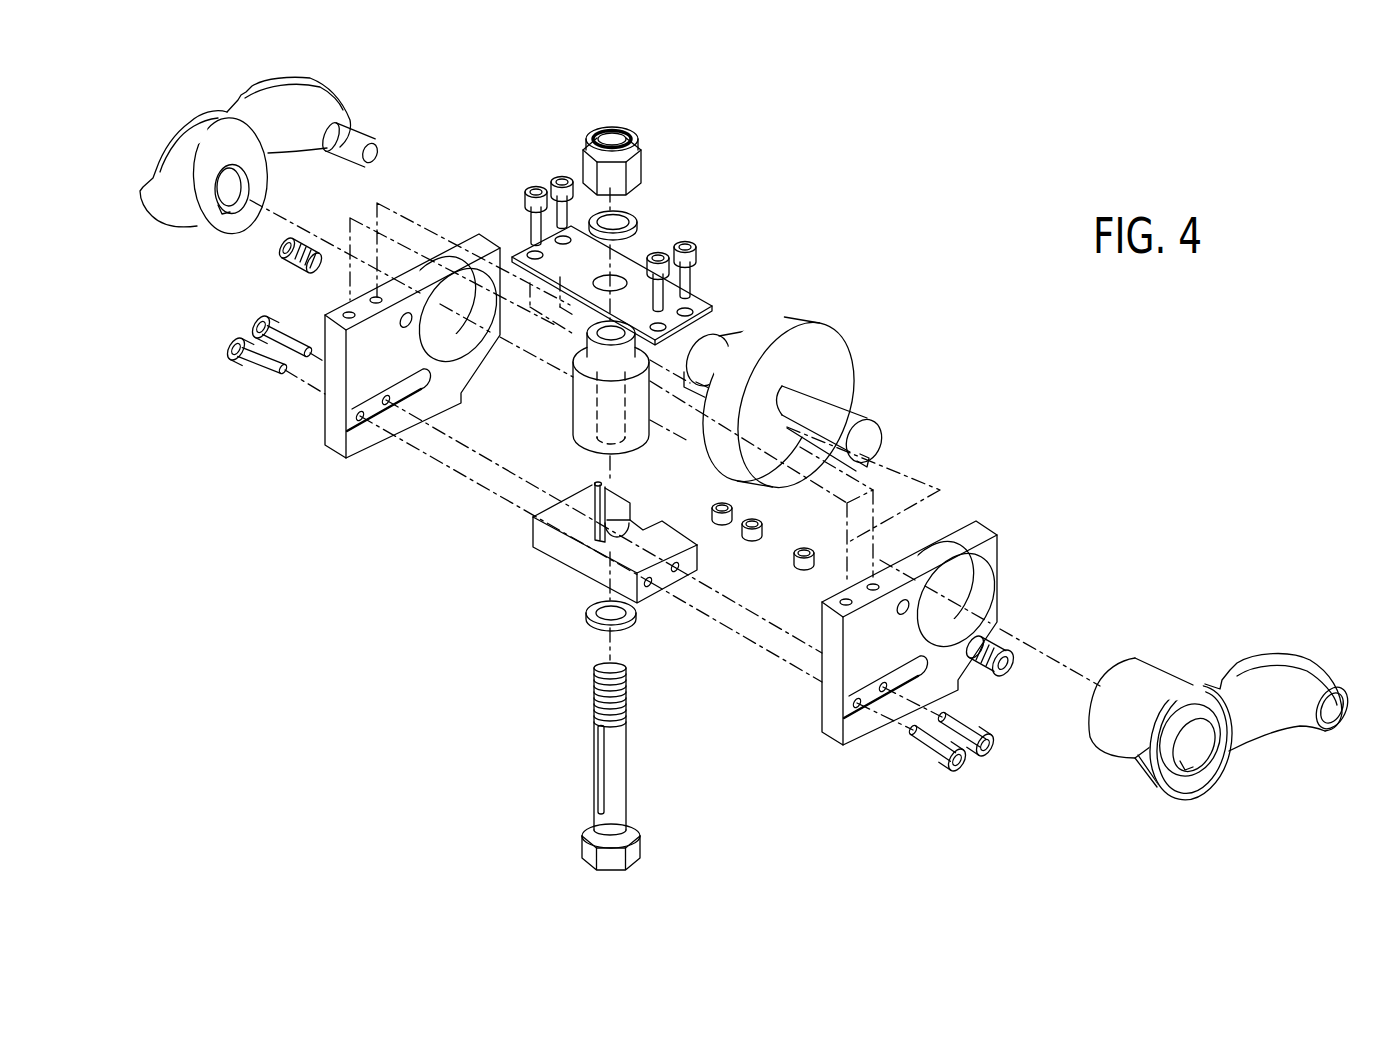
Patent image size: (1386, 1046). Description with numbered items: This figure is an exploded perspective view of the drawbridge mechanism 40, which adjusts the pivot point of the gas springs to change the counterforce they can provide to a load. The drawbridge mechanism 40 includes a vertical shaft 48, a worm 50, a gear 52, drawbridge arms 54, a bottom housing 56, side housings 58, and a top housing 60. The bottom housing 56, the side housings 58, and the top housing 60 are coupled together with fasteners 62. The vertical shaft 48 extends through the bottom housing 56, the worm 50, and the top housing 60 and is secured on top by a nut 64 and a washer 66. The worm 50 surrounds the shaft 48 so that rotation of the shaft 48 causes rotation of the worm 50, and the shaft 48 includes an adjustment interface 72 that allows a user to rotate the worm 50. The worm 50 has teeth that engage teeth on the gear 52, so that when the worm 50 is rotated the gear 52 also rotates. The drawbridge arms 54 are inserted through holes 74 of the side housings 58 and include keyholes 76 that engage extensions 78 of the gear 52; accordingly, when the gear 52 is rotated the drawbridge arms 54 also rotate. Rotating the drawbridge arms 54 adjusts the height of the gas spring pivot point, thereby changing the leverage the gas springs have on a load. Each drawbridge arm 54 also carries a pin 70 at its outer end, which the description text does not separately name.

The drawbridge mechanism 40 is at (882, 203).
The vertical shaft 48 is at (613, 745).
The worm 50 is at (570, 393).
The gear 52 is at (832, 357).
The drawbridge arms 54 is at (300, 107).
The bottom housing 56 is at (533, 530).
The side housings 58 is at (333, 432).
The top housing 60 is at (628, 272).
The fasteners 62 is at (535, 220).
The nut 64 is at (590, 137).
The washer 66 is at (628, 217).
The pin 70 is at (347, 138).
The adjustment interface 72 is at (582, 837).
The holes 74 is at (450, 347).
The keyholes 76 is at (220, 188).
The extensions 78 is at (715, 337).